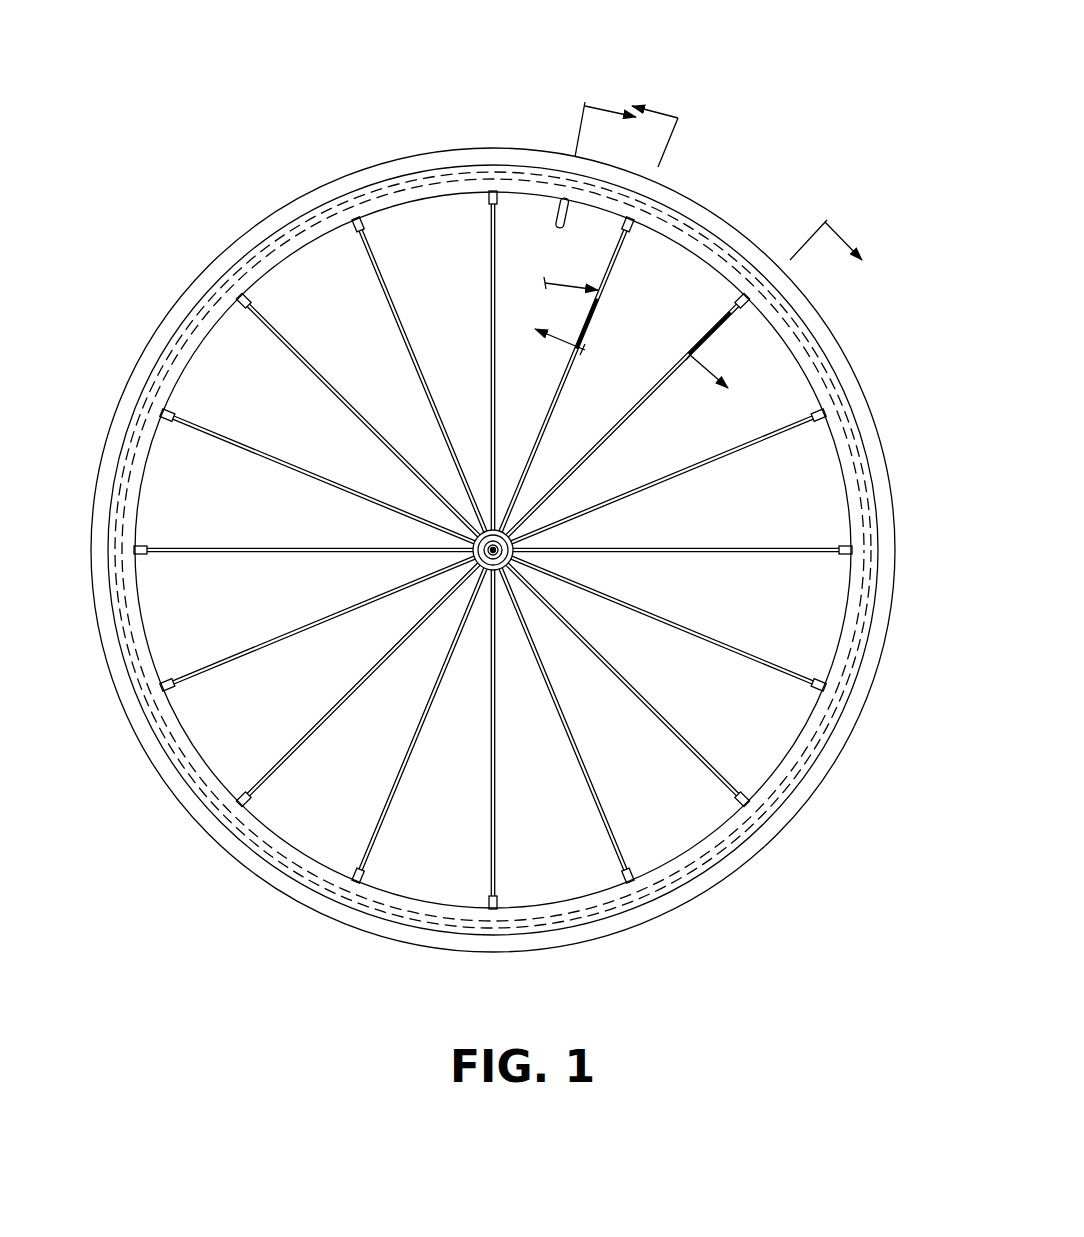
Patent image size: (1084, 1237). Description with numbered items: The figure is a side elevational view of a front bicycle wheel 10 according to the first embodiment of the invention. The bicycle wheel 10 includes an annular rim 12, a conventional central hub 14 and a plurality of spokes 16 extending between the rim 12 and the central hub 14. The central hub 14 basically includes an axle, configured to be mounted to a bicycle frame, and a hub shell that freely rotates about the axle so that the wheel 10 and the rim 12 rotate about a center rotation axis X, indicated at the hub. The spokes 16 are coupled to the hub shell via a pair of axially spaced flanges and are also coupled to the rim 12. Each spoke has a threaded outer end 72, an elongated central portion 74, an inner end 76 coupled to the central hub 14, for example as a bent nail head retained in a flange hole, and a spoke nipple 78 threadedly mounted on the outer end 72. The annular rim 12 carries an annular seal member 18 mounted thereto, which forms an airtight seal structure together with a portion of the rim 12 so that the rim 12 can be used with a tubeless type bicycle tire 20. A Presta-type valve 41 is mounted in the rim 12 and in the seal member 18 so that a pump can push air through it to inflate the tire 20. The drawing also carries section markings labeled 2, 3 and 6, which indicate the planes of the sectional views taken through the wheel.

The bicycle wheel 10 is at (776, 108).
The annular rim 12 is at (197, 364).
The central hub 14 is at (534, 542).
The spokes 16 is at (219, 559).
The annular seal member 18 is at (366, 196).
The tubeless type bicycle tire 20 is at (400, 174).
The valve 41 is at (556, 209).
The threaded outer end 72 is at (813, 424).
The elongated central portion 74 is at (614, 668).
The inner end 76 is at (532, 592).
The spoke nipple 78 is at (483, 896).
The center rotation axis X is at (491, 552).
The section line 2- 2 is at (778, 304).
The section line 3- 3 is at (607, 225).
The section line 6- 6 is at (590, 208).